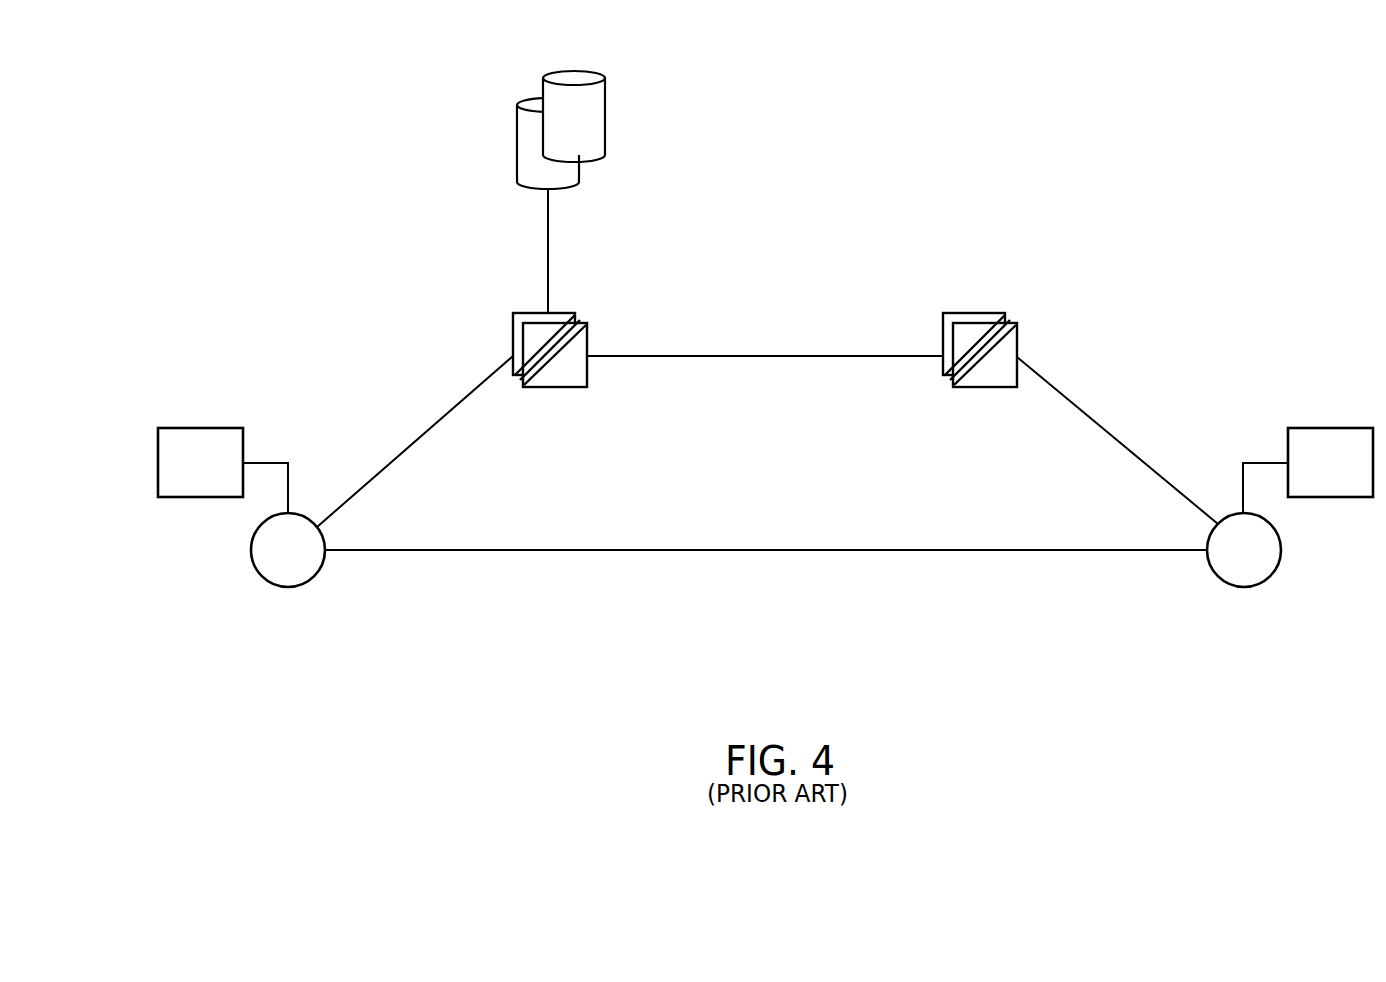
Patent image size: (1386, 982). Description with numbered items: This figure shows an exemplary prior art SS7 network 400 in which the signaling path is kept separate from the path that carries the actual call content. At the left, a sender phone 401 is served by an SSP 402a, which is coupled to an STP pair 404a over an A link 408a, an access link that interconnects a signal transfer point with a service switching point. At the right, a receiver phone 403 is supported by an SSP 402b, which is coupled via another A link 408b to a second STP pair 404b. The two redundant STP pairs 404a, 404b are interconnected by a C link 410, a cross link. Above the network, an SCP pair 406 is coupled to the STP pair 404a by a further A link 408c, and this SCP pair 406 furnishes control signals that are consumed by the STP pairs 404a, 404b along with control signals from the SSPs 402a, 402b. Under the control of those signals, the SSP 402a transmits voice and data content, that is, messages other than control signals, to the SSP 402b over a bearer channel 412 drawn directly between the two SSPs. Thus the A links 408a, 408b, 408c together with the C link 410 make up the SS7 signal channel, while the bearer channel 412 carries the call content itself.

The SS7 network 400 is at (1016, 177).
The sender phone 401 is at (197, 428).
The SSP 402a is at (274, 600).
The SSP 402b is at (1258, 600).
The receiver phone 403 is at (1330, 428).
The STP pair 404a is at (545, 398).
The STP pair 404b is at (1000, 398).
The SCP pair 406 is at (493, 120).
The A link 408a is at (437, 422).
The A link 408b is at (1097, 425).
The A link 408c is at (549, 242).
The C link 410 is at (780, 356).
The bearer channel 412 is at (772, 551).